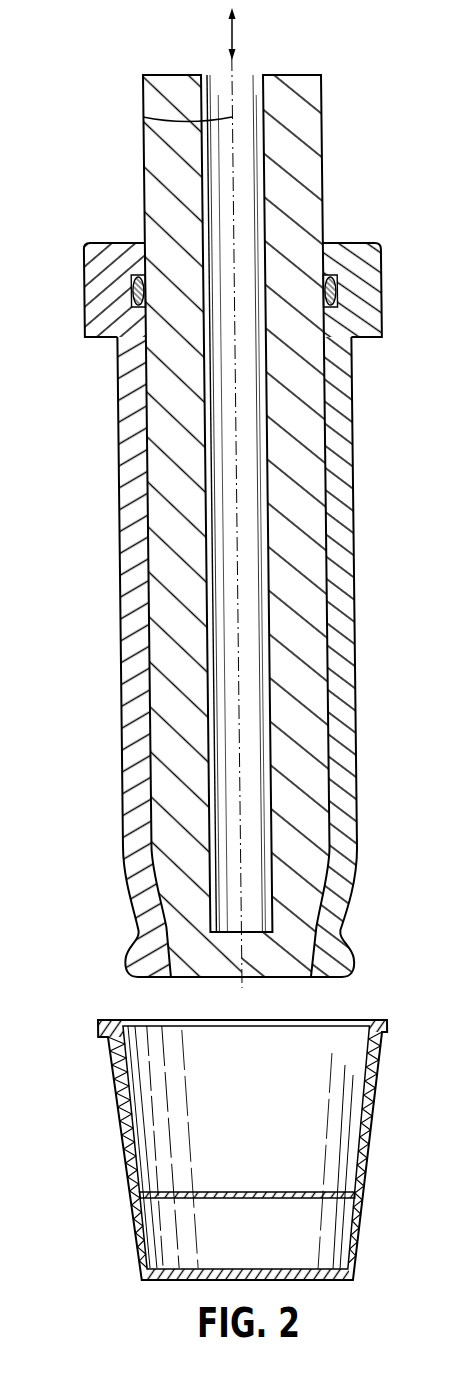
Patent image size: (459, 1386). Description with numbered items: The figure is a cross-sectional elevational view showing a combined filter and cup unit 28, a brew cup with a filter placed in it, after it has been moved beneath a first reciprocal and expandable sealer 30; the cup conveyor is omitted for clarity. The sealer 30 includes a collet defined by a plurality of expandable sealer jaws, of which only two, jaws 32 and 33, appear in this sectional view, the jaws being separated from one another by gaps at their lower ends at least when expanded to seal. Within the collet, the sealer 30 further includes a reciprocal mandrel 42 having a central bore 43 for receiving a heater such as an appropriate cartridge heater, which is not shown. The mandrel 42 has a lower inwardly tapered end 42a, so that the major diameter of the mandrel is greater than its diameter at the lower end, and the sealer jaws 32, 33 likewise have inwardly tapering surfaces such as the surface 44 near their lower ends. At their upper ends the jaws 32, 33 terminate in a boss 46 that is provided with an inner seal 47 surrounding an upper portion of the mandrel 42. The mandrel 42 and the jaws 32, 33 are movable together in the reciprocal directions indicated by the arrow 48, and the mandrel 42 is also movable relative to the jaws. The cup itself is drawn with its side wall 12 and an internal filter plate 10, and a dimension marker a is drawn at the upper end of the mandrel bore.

The filter plate 10 is at (296, 1204).
The cup side wall 12 is at (375, 1127).
The combined filter and cup unit 28 is at (111, 1200).
The first sealer 30 is at (90, 75).
The expandable sealer jaw 32 is at (120, 633).
The expandable sealer jaw 33 is at (357, 618).
The reciprocal mandrel 42 is at (142, 153).
The lower inwardly tapered end 42a is at (177, 917).
The bore 43 is at (213, 510).
The inwardly tapering surface 44 is at (310, 927).
The boss 46 is at (108, 250).
The inner seal 47 is at (328, 300).
The arrow 48 is at (232, 35).
The bore axis angle a is at (143, 117).